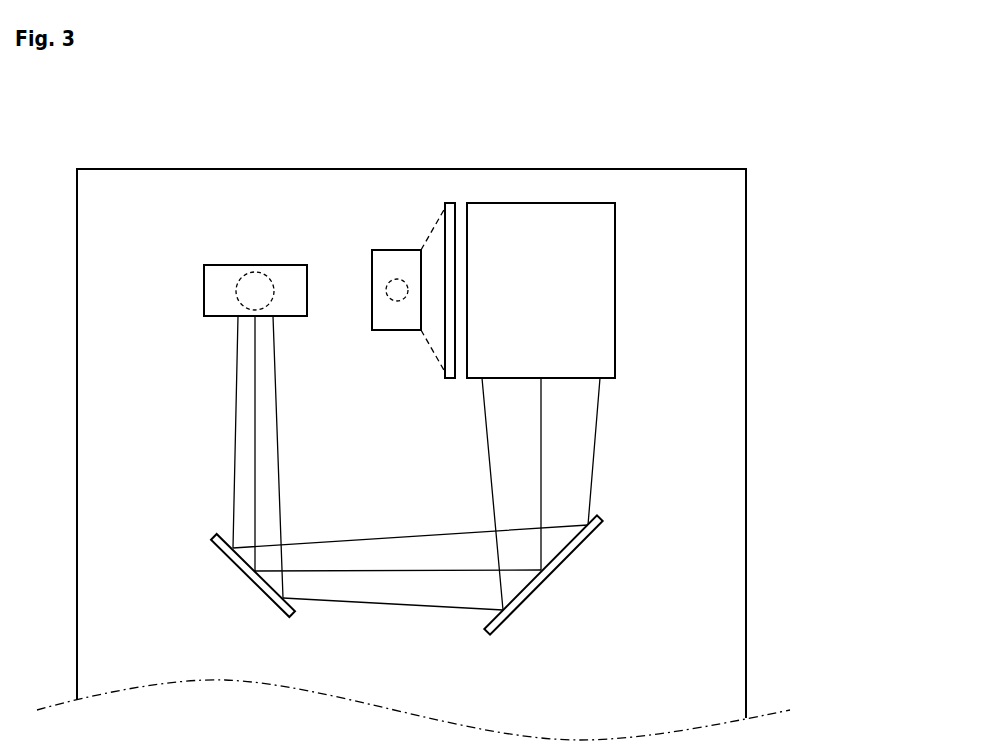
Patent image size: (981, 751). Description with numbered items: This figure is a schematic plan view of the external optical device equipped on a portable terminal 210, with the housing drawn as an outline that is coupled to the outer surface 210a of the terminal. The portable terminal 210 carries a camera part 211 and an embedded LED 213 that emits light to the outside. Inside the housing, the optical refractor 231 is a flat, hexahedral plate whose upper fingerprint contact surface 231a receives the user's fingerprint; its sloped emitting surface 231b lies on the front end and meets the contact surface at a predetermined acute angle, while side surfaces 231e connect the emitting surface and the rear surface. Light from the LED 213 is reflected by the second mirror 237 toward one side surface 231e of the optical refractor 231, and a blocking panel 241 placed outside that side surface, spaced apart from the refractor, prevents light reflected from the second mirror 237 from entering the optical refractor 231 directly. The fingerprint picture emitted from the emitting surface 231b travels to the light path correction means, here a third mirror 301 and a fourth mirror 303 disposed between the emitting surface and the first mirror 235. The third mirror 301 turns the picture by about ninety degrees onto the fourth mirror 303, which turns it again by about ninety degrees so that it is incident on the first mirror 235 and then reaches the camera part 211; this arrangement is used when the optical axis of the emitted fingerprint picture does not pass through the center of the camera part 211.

The portable terminal 210 is at (672, 158).
The outer surface of the portable terminal 210a is at (731, 508).
The camera part 211 is at (259, 272).
The LED 213 is at (395, 279).
The first mirror 235 is at (204, 288).
The second mirror 237 is at (406, 250).
The blocking panel 241 is at (448, 203).
The optical refractor 231 is at (625, 230).
The fingerprint contact surface 231a is at (600, 293).
The emitting surface 231b is at (575, 378).
The side surface 231e is at (467, 208).
The third mirror 301 is at (550, 580).
The fourth mirror 303 is at (248, 580).